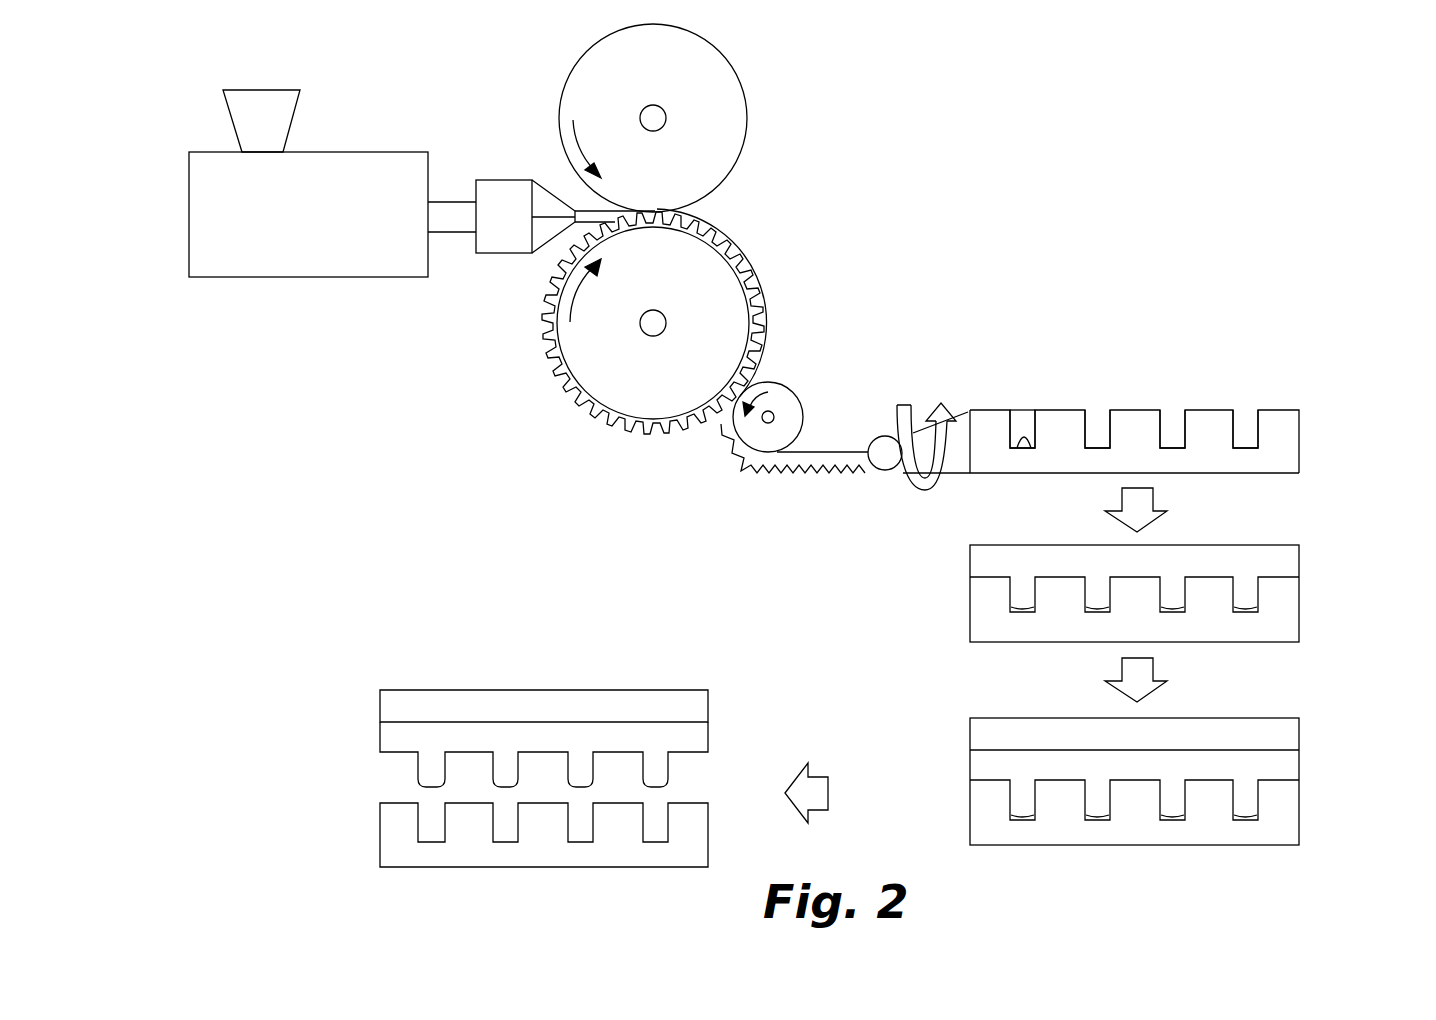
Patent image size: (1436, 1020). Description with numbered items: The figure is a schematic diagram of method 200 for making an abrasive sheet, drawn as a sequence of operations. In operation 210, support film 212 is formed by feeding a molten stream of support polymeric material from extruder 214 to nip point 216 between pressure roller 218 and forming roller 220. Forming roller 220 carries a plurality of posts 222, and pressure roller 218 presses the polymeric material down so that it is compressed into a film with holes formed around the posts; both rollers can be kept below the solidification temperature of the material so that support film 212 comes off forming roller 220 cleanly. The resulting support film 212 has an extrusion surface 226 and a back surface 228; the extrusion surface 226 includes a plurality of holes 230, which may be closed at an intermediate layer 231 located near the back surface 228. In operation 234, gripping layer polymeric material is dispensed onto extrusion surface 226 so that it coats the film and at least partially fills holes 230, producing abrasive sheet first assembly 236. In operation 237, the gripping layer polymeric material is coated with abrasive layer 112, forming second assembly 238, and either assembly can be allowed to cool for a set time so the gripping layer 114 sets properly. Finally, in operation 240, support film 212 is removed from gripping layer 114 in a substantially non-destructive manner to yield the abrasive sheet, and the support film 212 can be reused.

The method 200 is at (954, 117).
The operation 210 is at (320, 169).
The extruder 214 is at (361, 152).
The nip point 216 is at (655, 211).
The pressure roller 218 is at (727, 93).
The forming roller 220 is at (614, 323).
The posts 222 is at (553, 347).
The support film 212 is at (860, 596).
The extrusion surface 226 is at (1133, 410).
The back surface 228 is at (1290, 474).
The holes 230 is at (1015, 393).
The intermediate layer 231 is at (1023, 442).
The operation 234 is at (955, 597).
The abrasive sheet first assembly 236 is at (1151, 593).
The operation 237 is at (933, 727).
The second assembly 238 is at (1134, 775).
The operation 240 is at (486, 705).
The abrasive layer 112 is at (392, 704).
The gripping layer 114 is at (392, 736).